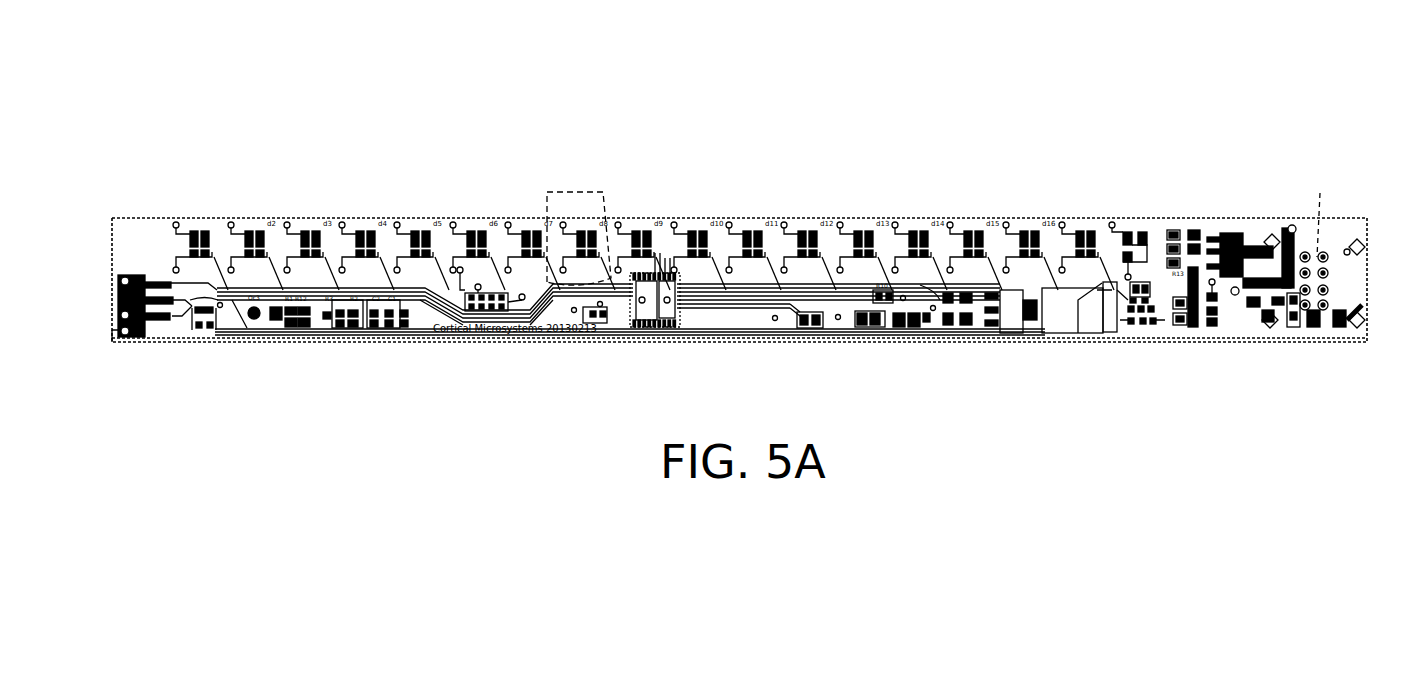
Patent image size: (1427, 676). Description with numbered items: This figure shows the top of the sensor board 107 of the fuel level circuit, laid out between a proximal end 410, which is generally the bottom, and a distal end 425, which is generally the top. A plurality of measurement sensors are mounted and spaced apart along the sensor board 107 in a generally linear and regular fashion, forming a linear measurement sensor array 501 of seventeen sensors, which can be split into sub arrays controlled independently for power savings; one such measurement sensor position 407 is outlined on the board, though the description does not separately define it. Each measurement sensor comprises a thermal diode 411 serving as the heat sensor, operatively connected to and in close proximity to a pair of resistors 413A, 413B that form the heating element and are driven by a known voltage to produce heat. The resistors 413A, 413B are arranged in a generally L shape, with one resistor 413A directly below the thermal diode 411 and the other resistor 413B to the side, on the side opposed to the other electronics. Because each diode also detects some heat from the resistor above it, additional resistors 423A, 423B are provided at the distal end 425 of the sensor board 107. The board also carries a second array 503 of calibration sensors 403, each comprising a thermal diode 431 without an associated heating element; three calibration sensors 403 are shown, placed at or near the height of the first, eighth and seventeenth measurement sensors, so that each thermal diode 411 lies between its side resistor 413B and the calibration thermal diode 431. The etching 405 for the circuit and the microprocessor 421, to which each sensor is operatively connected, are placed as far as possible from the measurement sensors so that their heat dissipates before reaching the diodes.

The sensor board 107 is at (757, 128).
The calibration sensor 403 is at (213, 425).
The etching 405 is at (750, 328).
The LED segment 407 is at (577, 180).
The proximal end 410 is at (100, 333).
The thermal diode 411 is at (215, 250).
The resistor 413A is at (188, 247).
The resistor 413B is at (206, 224).
The microprocessor 421 is at (666, 322).
The additional resistor 423A is at (1125, 250).
The additional resistor 423B is at (1132, 233).
The distal end 425 is at (1367, 287).
The thermal diode 431 is at (205, 323).
The linear measurement sensor array 501 is at (135, 244).
The second array 503 is at (107, 313).